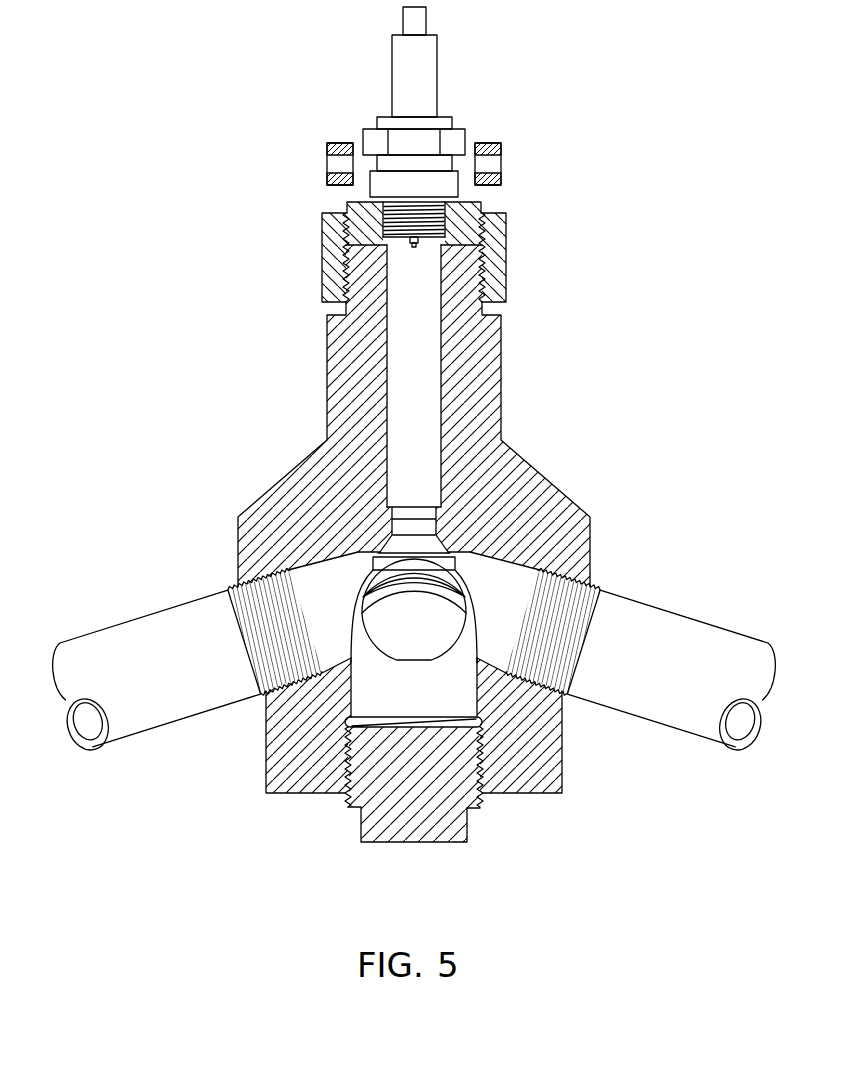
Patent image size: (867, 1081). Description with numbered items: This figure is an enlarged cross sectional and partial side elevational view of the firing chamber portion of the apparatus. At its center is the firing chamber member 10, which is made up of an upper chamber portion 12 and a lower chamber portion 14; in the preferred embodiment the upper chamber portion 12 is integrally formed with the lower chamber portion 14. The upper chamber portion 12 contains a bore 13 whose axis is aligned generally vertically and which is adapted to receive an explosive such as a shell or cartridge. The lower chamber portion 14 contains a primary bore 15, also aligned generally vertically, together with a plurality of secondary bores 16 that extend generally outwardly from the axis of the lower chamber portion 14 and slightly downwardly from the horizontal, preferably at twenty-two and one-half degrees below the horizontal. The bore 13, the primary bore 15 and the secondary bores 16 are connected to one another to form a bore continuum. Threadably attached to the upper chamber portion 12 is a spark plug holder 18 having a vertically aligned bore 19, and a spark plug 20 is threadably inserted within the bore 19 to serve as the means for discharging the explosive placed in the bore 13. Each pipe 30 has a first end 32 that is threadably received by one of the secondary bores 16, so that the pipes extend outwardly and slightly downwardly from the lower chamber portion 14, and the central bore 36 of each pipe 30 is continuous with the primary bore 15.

The firing chamber member 10 is at (677, 257).
The upper chamber portion 12 is at (485, 345).
The bore 13 is at (422, 307).
The lower chamber portion 14 is at (567, 507).
The primary bore 15 is at (372, 697).
The secondary bores 16 is at (328, 583).
The spark plug holder 18 is at (483, 207).
The bore 19 is at (347, 205).
The spark plug 20 is at (427, 77).
The pipe 30 is at (128, 642).
The first end 32 is at (257, 582).
The central bore 36 is at (87, 720).